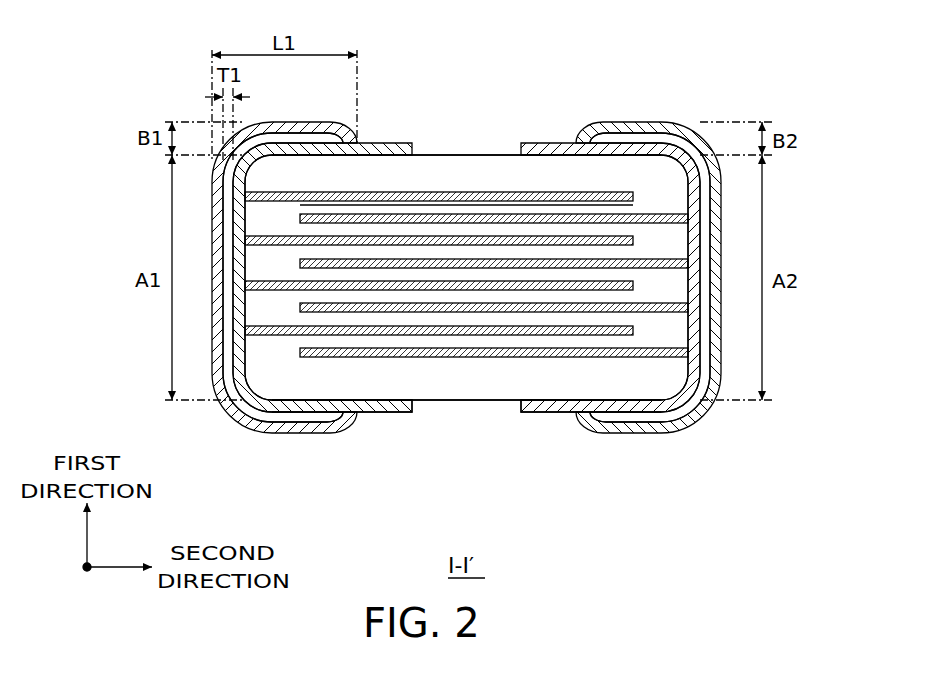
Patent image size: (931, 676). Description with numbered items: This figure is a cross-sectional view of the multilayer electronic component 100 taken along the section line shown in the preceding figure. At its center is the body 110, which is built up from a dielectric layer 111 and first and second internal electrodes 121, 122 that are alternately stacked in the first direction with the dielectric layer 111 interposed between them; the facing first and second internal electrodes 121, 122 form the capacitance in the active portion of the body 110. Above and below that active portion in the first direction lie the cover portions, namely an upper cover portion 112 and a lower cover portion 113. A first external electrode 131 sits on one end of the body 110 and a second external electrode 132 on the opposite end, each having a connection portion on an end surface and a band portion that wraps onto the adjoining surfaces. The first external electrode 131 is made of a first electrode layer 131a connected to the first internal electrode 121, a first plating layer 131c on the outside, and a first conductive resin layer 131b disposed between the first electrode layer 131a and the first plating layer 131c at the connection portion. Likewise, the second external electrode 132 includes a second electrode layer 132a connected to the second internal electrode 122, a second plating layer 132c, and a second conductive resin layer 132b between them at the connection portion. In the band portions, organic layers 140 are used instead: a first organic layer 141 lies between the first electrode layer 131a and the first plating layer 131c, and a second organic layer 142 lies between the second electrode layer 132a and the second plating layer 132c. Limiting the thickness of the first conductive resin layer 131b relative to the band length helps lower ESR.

The multilayer electronic component 100 is at (432, 28).
The body 110 is at (425, 155).
The dielectric layer 111 is at (455, 207).
The upper cover portion 112 is at (515, 175).
The lower cover portion 113 is at (550, 387).
The first internal electrode 121 is at (573, 187).
The second internal electrode 122 is at (657, 214).
The first external electrode 131 is at (380, 497).
The first electrode layer 131a is at (312, 407).
The first conductive resin layer 131b is at (250, 432).
The first plating layer 131c is at (227, 427).
The second external electrode 132 is at (752, 497).
The second electrode layer 132a is at (600, 432).
The second conductive resin layer 132b is at (688, 412).
The second plating layer 132c is at (730, 395).
The organic layer 140 is at (497, 482).
The first organic layer 141 is at (397, 407).
The second organic layer 142 is at (527, 417).